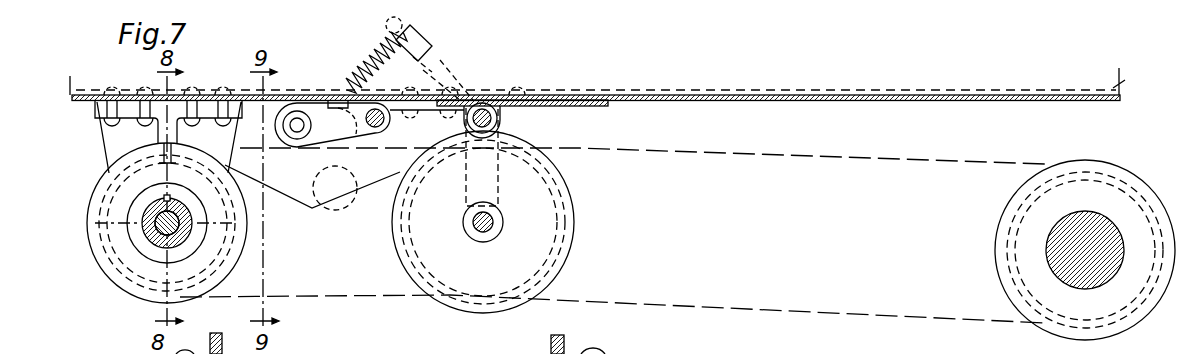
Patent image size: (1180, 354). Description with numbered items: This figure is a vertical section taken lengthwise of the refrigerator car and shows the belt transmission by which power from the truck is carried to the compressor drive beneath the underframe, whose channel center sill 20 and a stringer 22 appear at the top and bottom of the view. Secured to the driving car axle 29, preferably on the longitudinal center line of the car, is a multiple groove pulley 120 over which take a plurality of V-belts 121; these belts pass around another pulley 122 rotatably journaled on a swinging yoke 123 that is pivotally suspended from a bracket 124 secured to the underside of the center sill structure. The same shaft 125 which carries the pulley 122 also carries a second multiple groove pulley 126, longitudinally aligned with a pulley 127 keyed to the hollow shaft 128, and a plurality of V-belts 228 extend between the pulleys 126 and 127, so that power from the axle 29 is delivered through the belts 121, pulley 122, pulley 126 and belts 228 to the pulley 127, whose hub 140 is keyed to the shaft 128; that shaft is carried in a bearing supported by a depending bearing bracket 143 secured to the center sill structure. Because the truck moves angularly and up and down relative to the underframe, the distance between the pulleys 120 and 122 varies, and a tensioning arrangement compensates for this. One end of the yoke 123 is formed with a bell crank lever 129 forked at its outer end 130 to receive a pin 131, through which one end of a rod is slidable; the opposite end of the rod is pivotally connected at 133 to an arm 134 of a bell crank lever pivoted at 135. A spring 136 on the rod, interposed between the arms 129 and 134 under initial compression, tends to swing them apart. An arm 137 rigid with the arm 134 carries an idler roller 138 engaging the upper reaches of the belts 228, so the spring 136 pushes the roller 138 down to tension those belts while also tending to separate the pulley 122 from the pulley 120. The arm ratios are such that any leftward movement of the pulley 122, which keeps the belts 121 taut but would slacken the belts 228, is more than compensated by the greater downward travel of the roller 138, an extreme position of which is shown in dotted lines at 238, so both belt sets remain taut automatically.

The channel center sill 20 is at (1122, 84).
The stringer 22 is at (1036, 348).
The driving car axle 29 is at (1093, 207).
The multiple groove pulley 120 is at (1111, 162).
The V-belts 121 is at (833, 157).
The pulley 122 is at (574, 244).
The swinging yoke 123 is at (499, 200).
The bracket 124 is at (534, 109).
The shaft 125 is at (484, 234).
The second multiple groove pulley 126 is at (575, 208).
The pulley 127 is at (106, 264).
The shaft 128 is at (145, 233).
The bell crank lever 129 is at (453, 64).
The forked outer end 130 is at (428, 38).
The pin 131 is at (389, 31).
The pivotal connection 133 is at (344, 98).
The arm 134 is at (353, 130).
The pivot 135 is at (386, 121).
The spring 136 is at (378, 64).
The arm 137 is at (326, 134).
The idler roller 138 is at (287, 110).
The hub 140 is at (152, 256).
The depending bearing bracket 143 is at (96, 131).
The V-belts 228 is at (349, 297).
The extreme position of idler roller 238 is at (316, 209).